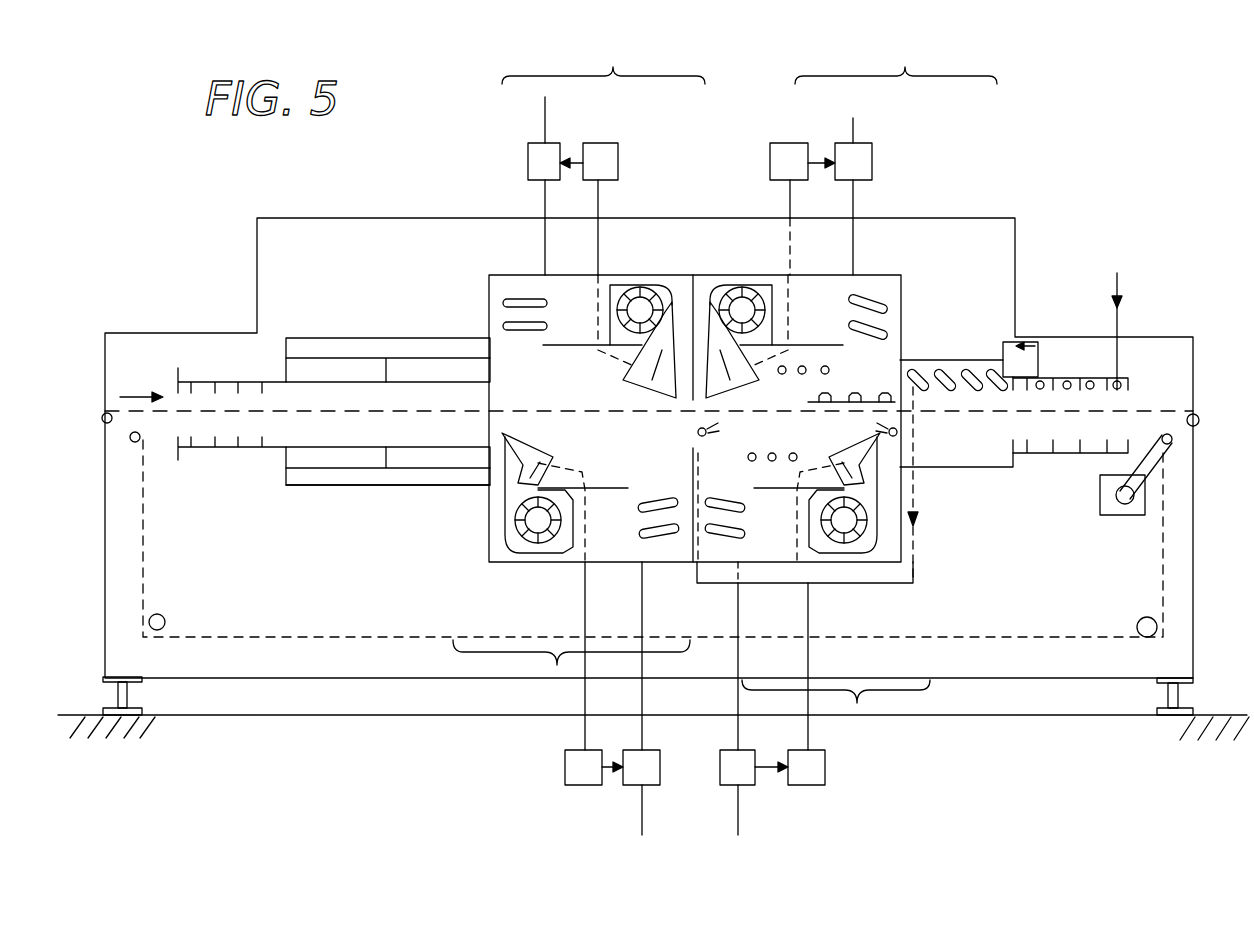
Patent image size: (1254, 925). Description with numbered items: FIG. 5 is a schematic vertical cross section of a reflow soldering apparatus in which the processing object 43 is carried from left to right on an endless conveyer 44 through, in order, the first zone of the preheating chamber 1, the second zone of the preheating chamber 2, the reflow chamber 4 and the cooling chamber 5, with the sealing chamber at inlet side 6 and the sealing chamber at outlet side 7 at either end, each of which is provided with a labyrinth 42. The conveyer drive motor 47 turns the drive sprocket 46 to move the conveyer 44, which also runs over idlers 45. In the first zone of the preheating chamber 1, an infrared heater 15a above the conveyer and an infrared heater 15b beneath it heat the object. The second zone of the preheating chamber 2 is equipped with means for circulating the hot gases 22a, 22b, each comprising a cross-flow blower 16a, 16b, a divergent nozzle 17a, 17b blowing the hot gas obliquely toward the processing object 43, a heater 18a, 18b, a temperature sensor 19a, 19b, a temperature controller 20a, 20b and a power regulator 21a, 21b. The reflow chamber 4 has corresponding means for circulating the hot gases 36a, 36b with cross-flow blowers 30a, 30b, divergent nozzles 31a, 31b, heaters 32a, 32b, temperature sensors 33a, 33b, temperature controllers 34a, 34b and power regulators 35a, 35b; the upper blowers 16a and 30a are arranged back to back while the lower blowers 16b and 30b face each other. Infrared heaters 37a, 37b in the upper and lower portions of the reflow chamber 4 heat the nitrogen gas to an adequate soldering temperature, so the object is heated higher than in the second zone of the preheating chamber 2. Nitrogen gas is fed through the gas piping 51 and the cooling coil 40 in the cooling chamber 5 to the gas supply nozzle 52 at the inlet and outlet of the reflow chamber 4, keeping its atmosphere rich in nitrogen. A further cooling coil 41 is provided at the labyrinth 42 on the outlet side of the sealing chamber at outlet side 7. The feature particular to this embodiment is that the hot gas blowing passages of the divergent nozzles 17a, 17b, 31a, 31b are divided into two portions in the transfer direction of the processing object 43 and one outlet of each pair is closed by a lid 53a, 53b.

The first zone of the preheating chamber 1 is at (368, 335).
The second zone of the preheating chamber 2 is at (489, 268).
The reflow chamber 4 is at (903, 290).
The cooling chamber 5 is at (945, 372).
The sealing chamber at inlet side 6 is at (210, 383).
The sealing chamber at outlet side 7 is at (1122, 378).
The infrared heater 15a is at (420, 360).
The infrared heater 15b is at (398, 465).
The cross-flow blower 16a is at (645, 292).
The cross-flow blower 16b is at (540, 548).
The divergent nozzle 17a is at (678, 360).
The divergent nozzle 17b is at (505, 545).
The heater 18a is at (547, 303).
The heater 18b is at (640, 532).
The temperature sensor 19a is at (598, 200).
The temperature sensor 19b is at (586, 526).
The temperature controller 20a is at (598, 143).
The temperature controller 20b is at (585, 700).
The power regulator 21a is at (528, 150).
The power regulator 21b is at (642, 700).
The means for circulating the hot gases 22a is at (603, 59).
The means for circulating the hot gases 22b is at (571, 676).
The cross-flow blower 30a is at (765, 295).
The cross-flow blower 30b is at (845, 552).
The divergent nozzle 31a is at (880, 300).
The divergent nozzle 31b is at (875, 560).
The heater 32a is at (835, 335).
The heater 32b is at (850, 570).
The temperature sensor 33a is at (792, 236).
The temperature sensor 33b is at (740, 580).
The temperature controller 34a is at (795, 143).
The temperature controller 34b is at (808, 590).
The power regulator 35a is at (858, 143).
The power regulator 35b is at (742, 600).
The means for circulating the hot gases 36a is at (896, 59).
The means for circulating the hot gases 36b is at (836, 713).
The infrared heater 37a is at (812, 372).
The infrared heater 37b is at (750, 465).
The cooling coil 40 is at (1025, 352).
The cooling coil 41 is at (1063, 379).
The labyrinth 42 is at (268, 396).
The processing object 43 is at (905, 362).
The conveyer 44 is at (345, 480).
The idler 45 is at (104, 414).
The drive sprocket 46 is at (1172, 445).
The conveyer drive motor 47 is at (1125, 515).
The gas piping 51 is at (1120, 276).
The gas supply nozzle 52 is at (698, 432).
The lid 53a is at (650, 378).
The lid 53b is at (530, 447).